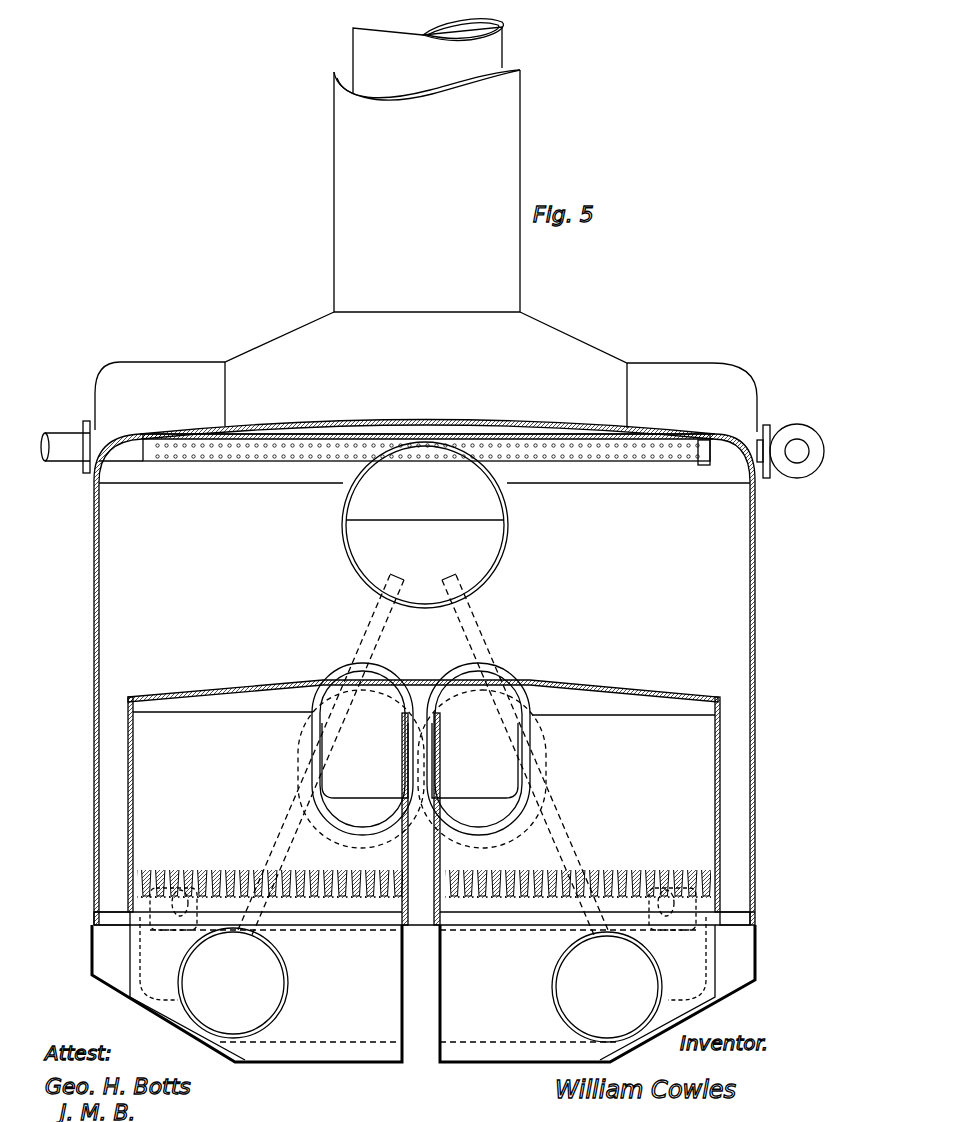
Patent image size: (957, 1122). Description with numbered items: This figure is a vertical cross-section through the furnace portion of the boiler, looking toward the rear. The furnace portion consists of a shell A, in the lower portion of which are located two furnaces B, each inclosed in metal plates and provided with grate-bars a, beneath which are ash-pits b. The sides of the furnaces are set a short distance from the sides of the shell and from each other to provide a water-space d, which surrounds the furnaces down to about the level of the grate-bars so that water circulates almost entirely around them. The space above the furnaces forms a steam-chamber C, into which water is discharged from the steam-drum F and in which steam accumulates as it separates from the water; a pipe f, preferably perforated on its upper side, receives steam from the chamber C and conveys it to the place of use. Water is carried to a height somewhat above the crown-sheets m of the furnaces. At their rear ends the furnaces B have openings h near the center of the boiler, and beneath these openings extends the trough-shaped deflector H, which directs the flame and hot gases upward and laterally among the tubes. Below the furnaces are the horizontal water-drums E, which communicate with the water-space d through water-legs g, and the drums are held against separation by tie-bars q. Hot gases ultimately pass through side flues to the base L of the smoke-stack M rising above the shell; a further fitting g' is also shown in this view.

The smoke-stack M is at (427, 165).
The base of the smoke-stack L is at (426, 372).
The shell A is at (94, 662).
The pipe f is at (612, 455).
The steam-chamber C is at (424, 544).
The water-legs g is at (425, 525).
The steam-drum F is at (446, 606).
The tie-bars q is at (368, 636).
The crown-sheets m is at (423, 683).
The furnaces B is at (424, 804).
The openings h is at (422, 755).
The trough-shaped deflector H is at (420, 760).
The water-space d is at (424, 819).
The grate-bars a is at (424, 875).
The ash-pits b is at (423, 993).
The water-drums E is at (420, 985).
The valve g' is at (423, 945).